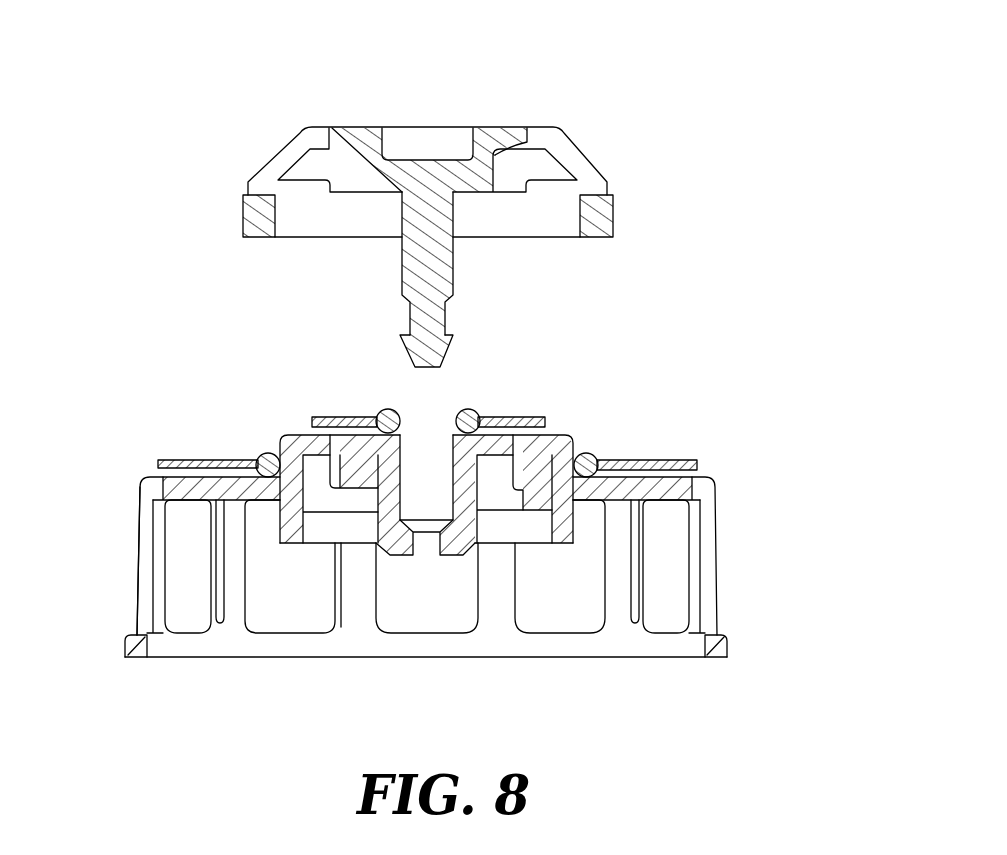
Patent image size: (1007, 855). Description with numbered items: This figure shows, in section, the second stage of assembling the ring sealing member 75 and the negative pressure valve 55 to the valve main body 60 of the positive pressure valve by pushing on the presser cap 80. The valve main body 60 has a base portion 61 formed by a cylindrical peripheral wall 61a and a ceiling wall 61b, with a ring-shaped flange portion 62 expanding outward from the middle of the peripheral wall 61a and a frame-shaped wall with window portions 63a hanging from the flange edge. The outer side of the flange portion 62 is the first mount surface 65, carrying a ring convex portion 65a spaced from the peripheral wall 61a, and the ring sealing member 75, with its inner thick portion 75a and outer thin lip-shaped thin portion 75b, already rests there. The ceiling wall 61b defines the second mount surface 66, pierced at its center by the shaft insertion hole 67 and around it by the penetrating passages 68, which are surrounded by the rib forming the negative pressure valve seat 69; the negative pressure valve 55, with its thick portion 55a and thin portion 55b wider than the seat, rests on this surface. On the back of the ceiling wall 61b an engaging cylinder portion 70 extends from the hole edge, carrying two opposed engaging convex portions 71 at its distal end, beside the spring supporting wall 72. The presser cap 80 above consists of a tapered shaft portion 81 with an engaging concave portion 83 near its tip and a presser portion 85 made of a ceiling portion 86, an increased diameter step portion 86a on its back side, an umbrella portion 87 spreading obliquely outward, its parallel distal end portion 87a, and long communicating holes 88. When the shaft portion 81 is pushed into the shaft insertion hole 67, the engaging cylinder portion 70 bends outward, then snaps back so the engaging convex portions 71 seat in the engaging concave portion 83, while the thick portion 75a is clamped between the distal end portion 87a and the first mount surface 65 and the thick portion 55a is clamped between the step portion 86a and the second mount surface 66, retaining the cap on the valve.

The presser cap 80 is at (447, 192).
The shaft portion 81 is at (447, 256).
The engaging concave portion 83 is at (442, 318).
The presser portion 85 is at (507, 136).
The ceiling portion 86 is at (517, 127).
The increased diameter step portion 86a is at (477, 185).
The umbrella portion 87 is at (547, 155).
The distal end portion 87a is at (255, 237).
The communicating holes 88 is at (283, 160).
The negative pressure valve 55 is at (468, 370).
The thick portion 55a is at (467, 409).
The thin portion 55b is at (547, 418).
The valve main body 60 is at (436, 514).
The base portion 61 is at (446, 507).
The peripheral wall 61a is at (290, 530).
The ceiling wall 61b is at (307, 440).
The flange portion 62 is at (173, 488).
The window portions 63a is at (141, 588).
The first mount surface 65 is at (430, 454).
The ring convex portion 65a is at (243, 473).
The second mount surface 66 is at (488, 418).
The shaft insertion hole 67 is at (428, 447).
The penetrating passages 68 is at (506, 418).
The negative pressure valve seat 69 is at (528, 418).
The engaging cylinder portion 70 is at (409, 542).
The engaging convex portions 71 is at (410, 556).
The spring supporting wall 72 is at (525, 488).
The ring sealing member 75 is at (651, 424).
The thick portion 75a is at (587, 452).
The thin portion 75b is at (688, 460).